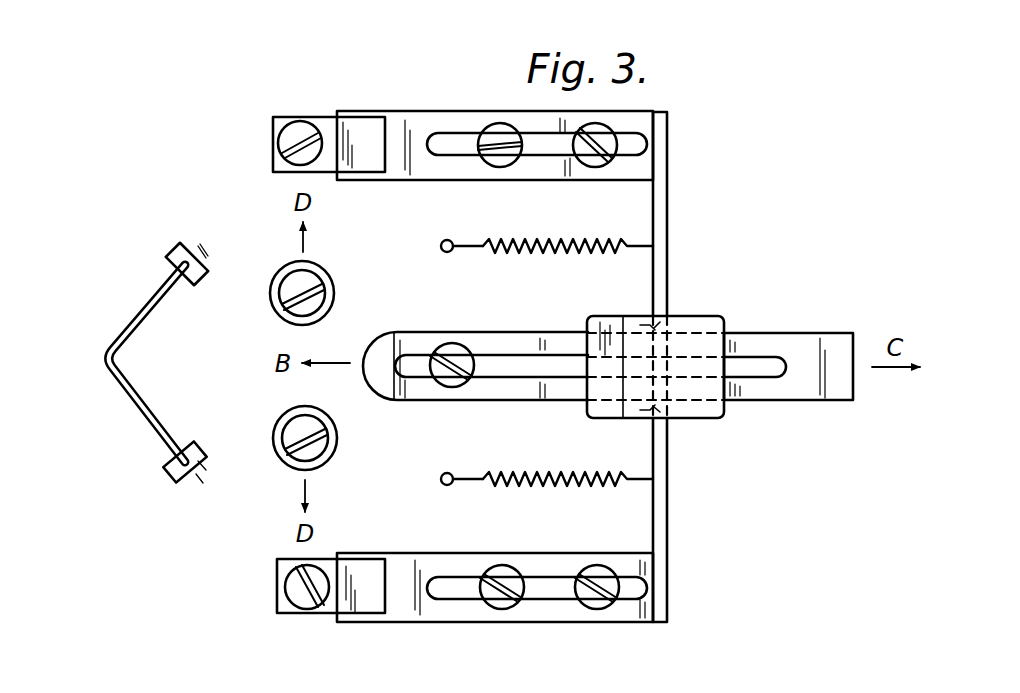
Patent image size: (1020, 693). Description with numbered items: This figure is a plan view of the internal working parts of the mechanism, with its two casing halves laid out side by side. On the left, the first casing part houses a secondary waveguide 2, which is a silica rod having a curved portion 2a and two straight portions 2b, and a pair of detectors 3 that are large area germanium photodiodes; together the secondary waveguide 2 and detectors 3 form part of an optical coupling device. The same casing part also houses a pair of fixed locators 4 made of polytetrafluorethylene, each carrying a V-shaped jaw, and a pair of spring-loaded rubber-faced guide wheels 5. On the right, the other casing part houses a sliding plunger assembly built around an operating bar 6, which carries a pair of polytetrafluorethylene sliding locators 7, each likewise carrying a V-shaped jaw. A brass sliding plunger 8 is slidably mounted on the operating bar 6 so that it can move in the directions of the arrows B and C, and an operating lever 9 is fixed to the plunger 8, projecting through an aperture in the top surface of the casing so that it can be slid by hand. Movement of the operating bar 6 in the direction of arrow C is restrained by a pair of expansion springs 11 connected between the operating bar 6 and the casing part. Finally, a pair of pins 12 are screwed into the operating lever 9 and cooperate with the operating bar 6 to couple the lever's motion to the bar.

The secondary waveguide 2 is at (120, 318).
The curved portion 2a is at (103, 363).
The straight portions 2b is at (150, 297).
The detectors 3 is at (178, 247).
The fixed locators 4 is at (318, 118).
The spring-loaded rubber-faced guide wheels 5 is at (334, 291).
The operating bar 6 is at (668, 213).
The sliding locators 7 is at (397, 118).
The sliding plunger 8 is at (497, 343).
The operating lever 9 is at (722, 398).
The expansion springs 11 is at (570, 240).
The pins 12 is at (668, 318).